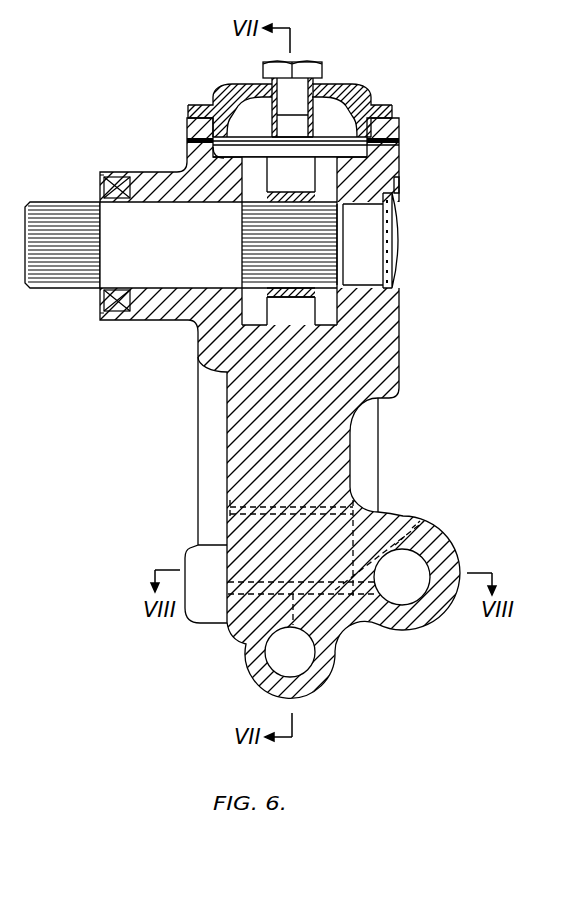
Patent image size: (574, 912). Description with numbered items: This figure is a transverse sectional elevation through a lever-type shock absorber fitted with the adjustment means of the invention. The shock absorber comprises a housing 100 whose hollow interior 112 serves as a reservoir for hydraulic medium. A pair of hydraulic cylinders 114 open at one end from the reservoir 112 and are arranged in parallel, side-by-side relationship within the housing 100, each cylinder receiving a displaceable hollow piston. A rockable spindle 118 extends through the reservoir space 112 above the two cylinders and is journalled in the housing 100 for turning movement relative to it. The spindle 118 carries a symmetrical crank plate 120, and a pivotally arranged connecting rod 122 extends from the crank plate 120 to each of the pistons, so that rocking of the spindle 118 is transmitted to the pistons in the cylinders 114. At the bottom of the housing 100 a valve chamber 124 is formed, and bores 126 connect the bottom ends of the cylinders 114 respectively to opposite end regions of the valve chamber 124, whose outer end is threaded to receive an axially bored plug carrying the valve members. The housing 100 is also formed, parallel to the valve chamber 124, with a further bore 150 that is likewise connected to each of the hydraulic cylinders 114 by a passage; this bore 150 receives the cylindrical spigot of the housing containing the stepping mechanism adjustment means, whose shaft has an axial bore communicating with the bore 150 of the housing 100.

The housing 100 is at (197, 410).
The hollow interior 112 is at (343, 153).
The hydraulic cylinders 114 is at (379, 506).
The rockable spindle 118 is at (64, 204).
The symmetrical crank plate 120 is at (323, 301).
The connecting rod 122 is at (283, 192).
The valve chamber 124 is at (451, 542).
The bores 126 is at (437, 518).
The further bore 150 is at (316, 661).